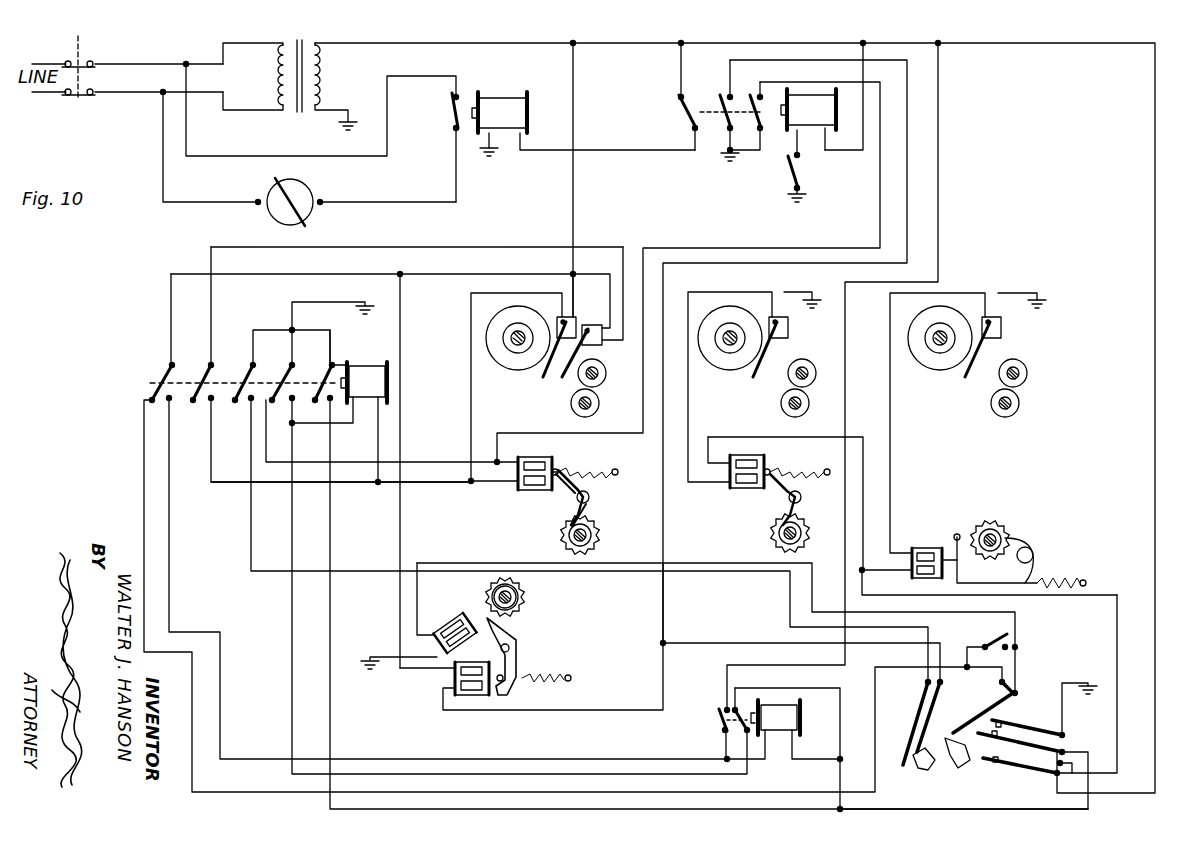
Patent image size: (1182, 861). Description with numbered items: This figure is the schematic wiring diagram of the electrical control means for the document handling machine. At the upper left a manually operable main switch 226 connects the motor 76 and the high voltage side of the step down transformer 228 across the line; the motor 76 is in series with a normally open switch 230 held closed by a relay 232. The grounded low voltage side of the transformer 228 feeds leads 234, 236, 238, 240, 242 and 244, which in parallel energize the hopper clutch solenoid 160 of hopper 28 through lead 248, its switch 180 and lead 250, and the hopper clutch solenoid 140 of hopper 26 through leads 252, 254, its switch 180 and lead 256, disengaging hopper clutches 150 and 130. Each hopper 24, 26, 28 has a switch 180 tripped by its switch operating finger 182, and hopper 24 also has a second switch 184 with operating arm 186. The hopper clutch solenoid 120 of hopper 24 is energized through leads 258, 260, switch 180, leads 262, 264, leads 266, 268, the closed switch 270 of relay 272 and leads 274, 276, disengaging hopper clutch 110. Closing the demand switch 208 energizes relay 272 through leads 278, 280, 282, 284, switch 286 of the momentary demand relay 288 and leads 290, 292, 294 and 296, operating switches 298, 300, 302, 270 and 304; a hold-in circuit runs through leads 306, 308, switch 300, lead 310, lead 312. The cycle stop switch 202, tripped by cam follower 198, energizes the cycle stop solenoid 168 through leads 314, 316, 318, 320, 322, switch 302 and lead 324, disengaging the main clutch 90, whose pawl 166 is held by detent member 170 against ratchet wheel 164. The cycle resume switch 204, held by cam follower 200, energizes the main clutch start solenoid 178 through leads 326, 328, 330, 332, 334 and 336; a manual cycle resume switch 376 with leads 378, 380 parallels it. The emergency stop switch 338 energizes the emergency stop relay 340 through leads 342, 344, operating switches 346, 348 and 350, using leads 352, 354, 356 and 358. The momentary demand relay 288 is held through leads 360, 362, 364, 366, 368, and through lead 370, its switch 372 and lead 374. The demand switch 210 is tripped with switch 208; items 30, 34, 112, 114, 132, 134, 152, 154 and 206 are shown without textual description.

The main switch 226 is at (82, 44).
The step down transformer 228 is at (303, 44).
The motor 76 is at (307, 198).
The normally open switch 230 is at (446, 118).
The relay 232 is at (507, 100).
The lead 234 is at (427, 43).
The lead 236 is at (610, 43).
The lead 238 is at (732, 43).
The lead 240 is at (886, 43).
The lead 242 is at (1080, 45).
The lead 370 is at (940, 157).
The relay switch 346 is at (679, 116).
The lead 354 is at (716, 128).
The relay switch 348 is at (716, 150).
The lead 352 is at (730, 60).
The emergency stop switch 338 is at (774, 182).
The lead 356 is at (773, 242).
The lead 358 is at (745, 154).
The relay switch 350 is at (743, 88).
The lead 344 is at (812, 130).
The emergency stop relay 340 is at (858, 150).
The lead 342 is at (862, 152).
The lead 258 is at (576, 214).
The lead 308 is at (606, 245).
The lead 314 is at (490, 271).
The lead 306 is at (612, 268).
The lead 326 is at (268, 275).
The lead 324 is at (267, 330).
The lead 276 is at (320, 302).
The lead 368 is at (317, 326).
The lead 274 is at (293, 348).
The relay switch 298 is at (163, 378).
The relay switch 300 is at (206, 378).
The relay switch 302 is at (247, 378).
The relay switch 270 is at (288, 378).
The relay switch 304 is at (333, 373).
The relay 272 is at (363, 368).
The lead 312 is at (292, 424).
The lead 282 is at (333, 427).
The lead 280 is at (378, 448).
The lead 328 is at (144, 456).
The lead 360 is at (182, 455).
The lead 310 is at (228, 483).
The lead 366 is at (327, 798).
The lead 294 is at (987, 806).
The lead 322 is at (250, 545).
The lead 284 is at (292, 617).
The lead 316 is at (402, 396).
The lead 336 is at (371, 656).
The lead 262 is at (487, 294).
The lead 260 is at (572, 283).
The lead 268 is at (437, 460).
The lead 278 is at (432, 481).
The lead 264 is at (490, 487).
The lead 266 is at (512, 459).
The hopper clutch solenoid 120 is at (537, 481).
The pawl arm 114 is at (567, 493).
The hopper clutch 110 is at (600, 528).
The ratchet wheel 112 is at (601, 536).
The switch 180 is at (580, 316).
The second switch 184 is at (598, 325).
The roll 30 is at (517, 353).
The switch operating finger 182 is at (540, 372).
The operating arm 186 is at (572, 368).
The idler rolls 34 is at (599, 403).
The hopper 24 is at (528, 408).
The lead 254 is at (703, 485).
The lead 252 is at (866, 449).
The hopper clutch solenoid 140 is at (740, 493).
The lead 256 is at (786, 291).
The solenoid 134 is at (778, 478).
The hopper clutch 130 is at (806, 524).
The ratchet wheel 132 is at (777, 548).
The hopper 26 is at (796, 338).
The lead 248 is at (890, 475).
The lead 250 is at (1013, 290).
The hopper 28 is at (1000, 332).
The hopper clutch solenoid 160 is at (922, 536).
The pawl arm 152 is at (990, 523).
The hopper clutch 150 is at (1017, 527).
The spring 154 is at (1040, 567).
The lead 296 is at (868, 573).
The lead 244 is at (1120, 703).
The lead 334 is at (473, 562).
The lead 318 is at (595, 711).
The main clutch start solenoid 178 is at (448, 620).
The main clutch 90 is at (532, 592).
The ratchet wheel 164 is at (525, 600).
The pawl 166 is at (518, 657).
The detent member 170 is at (540, 688).
The cycle stop solenoid 168 is at (470, 697).
The lead 320 is at (718, 634).
The relay switch 372 is at (718, 712).
The lead 374 is at (724, 745).
The relay switch 286 is at (762, 690).
The lead 290 is at (838, 687).
The momentary demand relay 288 is at (801, 717).
The lead 364 is at (815, 748).
The lead 362 is at (758, 760).
The lead 292 is at (840, 775).
The cycle resume switch 376 is at (995, 638).
The lead 378 is at (962, 660).
The lead 380 is at (1010, 643).
The lead 332 is at (1017, 663).
The lead 330 is at (980, 668).
The cycle resume switch 204 is at (950, 716).
The cycle stop switch 202 is at (913, 721).
The demand switch 208 is at (1012, 723).
The contact arm 206 is at (967, 750).
The demand switch 210 is at (1022, 770).
The cam follower 198 is at (918, 777).
The cam follower 200 is at (953, 744).